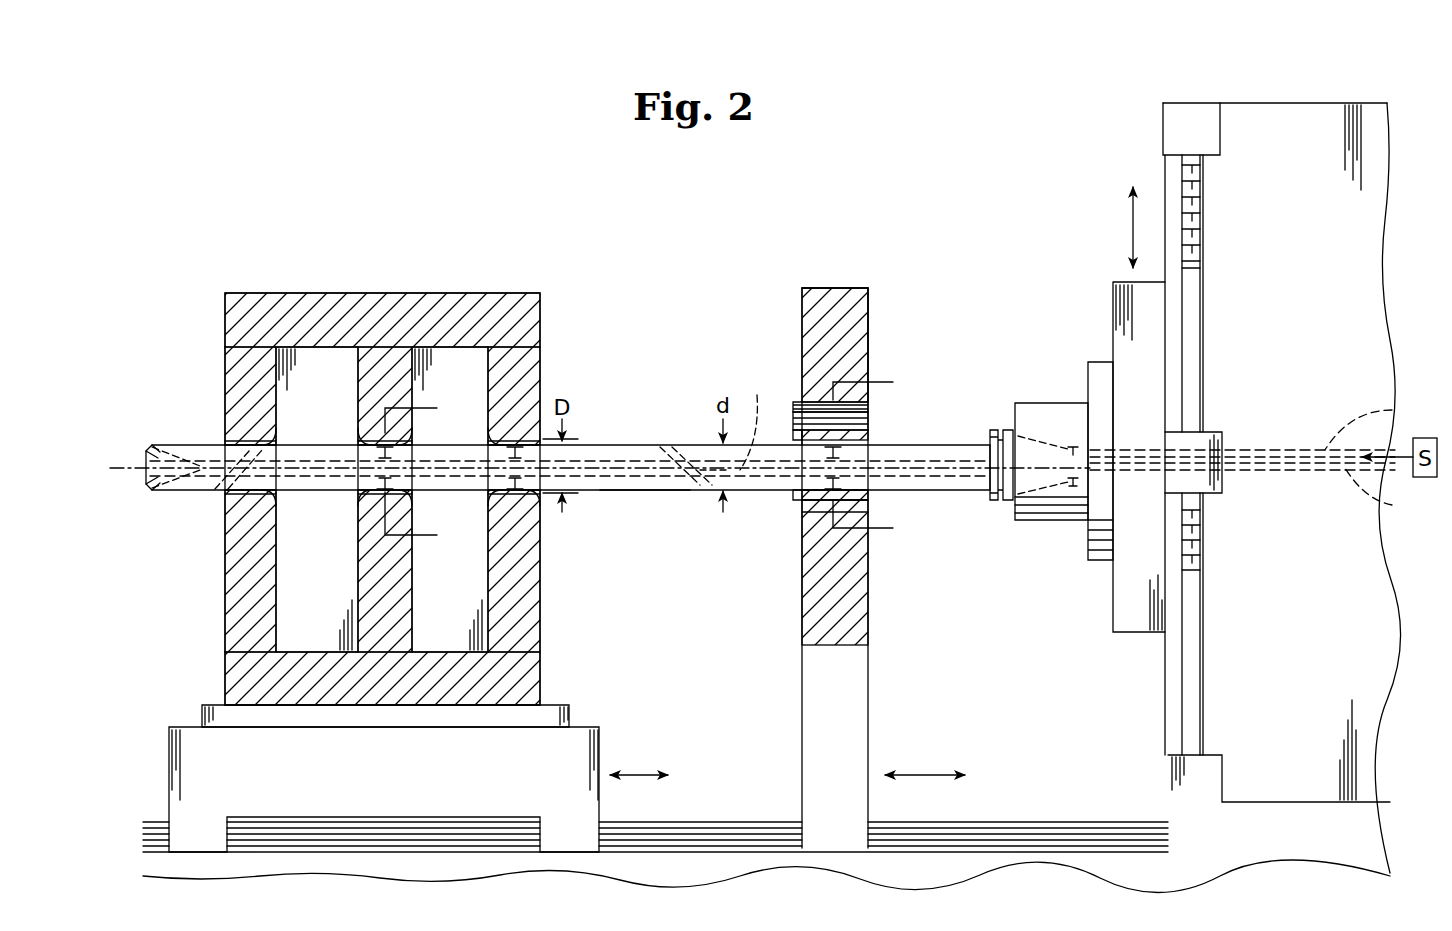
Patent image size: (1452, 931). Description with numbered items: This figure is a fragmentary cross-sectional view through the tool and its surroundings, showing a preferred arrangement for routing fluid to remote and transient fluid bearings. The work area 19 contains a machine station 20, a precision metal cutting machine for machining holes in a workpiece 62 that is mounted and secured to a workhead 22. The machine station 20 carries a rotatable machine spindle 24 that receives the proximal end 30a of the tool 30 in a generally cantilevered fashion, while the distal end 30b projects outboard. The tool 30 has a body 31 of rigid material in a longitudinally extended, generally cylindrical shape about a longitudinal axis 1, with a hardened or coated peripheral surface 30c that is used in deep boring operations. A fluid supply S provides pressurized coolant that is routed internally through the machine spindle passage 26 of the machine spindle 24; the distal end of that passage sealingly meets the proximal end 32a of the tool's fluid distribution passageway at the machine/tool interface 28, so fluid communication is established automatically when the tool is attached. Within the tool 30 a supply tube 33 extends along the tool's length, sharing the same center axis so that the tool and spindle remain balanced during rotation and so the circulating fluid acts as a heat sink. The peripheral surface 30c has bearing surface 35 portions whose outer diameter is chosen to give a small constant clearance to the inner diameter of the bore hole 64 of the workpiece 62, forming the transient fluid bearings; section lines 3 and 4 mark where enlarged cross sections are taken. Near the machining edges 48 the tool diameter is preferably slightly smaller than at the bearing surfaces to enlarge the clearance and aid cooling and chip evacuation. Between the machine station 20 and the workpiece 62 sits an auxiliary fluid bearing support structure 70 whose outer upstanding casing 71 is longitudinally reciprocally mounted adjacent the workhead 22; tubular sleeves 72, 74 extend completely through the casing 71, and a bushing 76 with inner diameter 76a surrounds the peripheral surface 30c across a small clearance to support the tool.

The longitudinal axis 1 is at (138, 468).
The section line 3 is at (425, 408).
The section line 4 is at (880, 382).
The work area 19 is at (949, 162).
The machine station 20 is at (1313, 92).
The workhead 22 is at (583, 702).
The machine spindle 24 is at (1392, 505).
The machine spindle passage 26 is at (1392, 409).
The machine/tool interface 28 is at (1080, 488).
The tool 30 is at (975, 432).
The proximal end 30a is at (1058, 430).
The distal end 30b is at (185, 507).
The peripheral surface 30c is at (637, 491).
The body 31 is at (712, 478).
The proximal end of fluid distribution passageway 32a is at (1025, 495).
The supply tube 33 is at (755, 420).
The bearing surface 35 is at (370, 440).
The machining edges 48 is at (160, 438).
The workpiece 62 is at (528, 313).
The bore hole 64 is at (515, 440).
The auxiliary fluid bearing support structure 70 is at (850, 536).
The outer upstanding casing 71 is at (868, 325).
The tubular sleeve 72 is at (868, 506).
The tubular sleeve 74 is at (868, 403).
The bushing 76 is at (793, 497).
The inner diameter of bushing 76a is at (868, 426).